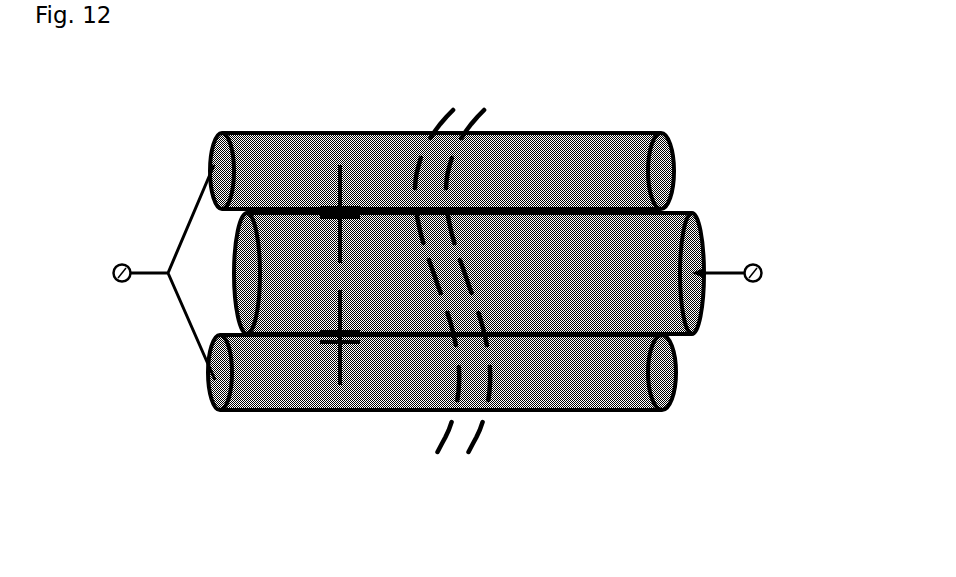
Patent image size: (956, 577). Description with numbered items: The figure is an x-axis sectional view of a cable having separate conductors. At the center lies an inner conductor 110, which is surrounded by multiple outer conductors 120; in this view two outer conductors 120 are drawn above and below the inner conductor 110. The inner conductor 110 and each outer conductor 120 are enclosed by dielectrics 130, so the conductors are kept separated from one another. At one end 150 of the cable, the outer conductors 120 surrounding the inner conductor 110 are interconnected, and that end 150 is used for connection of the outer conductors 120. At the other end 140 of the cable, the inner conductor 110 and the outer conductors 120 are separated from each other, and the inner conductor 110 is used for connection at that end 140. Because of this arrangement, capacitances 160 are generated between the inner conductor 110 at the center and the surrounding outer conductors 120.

The inner conductor 110 is at (693, 248).
The outer conductors 120 is at (660, 160).
The dielectrics 130 is at (637, 131).
The other end of the cable 140 is at (760, 270).
The one end of the cable 150 is at (113, 273).
The capacitances 160 is at (340, 165).